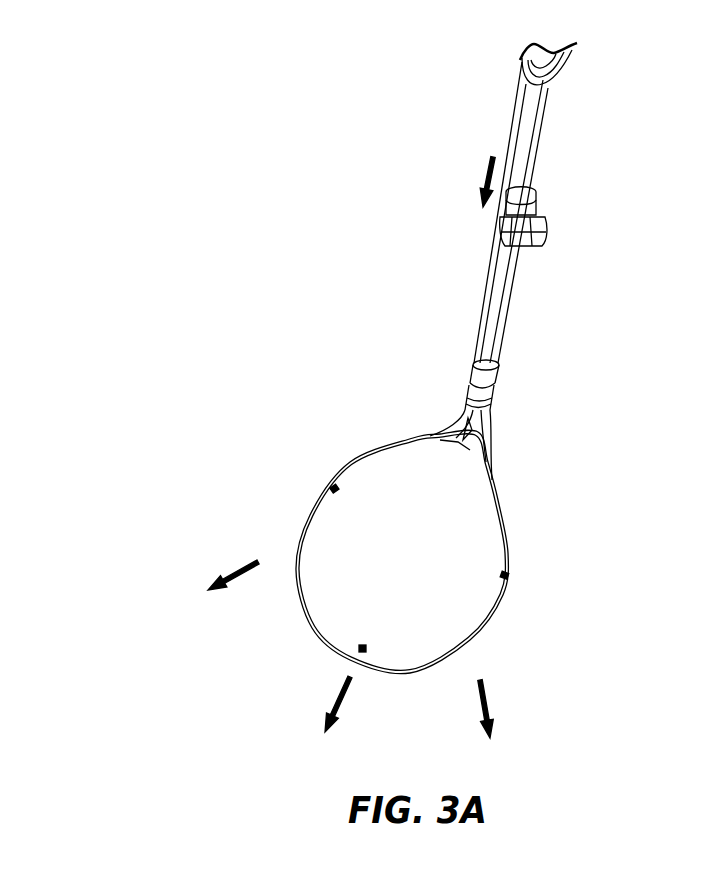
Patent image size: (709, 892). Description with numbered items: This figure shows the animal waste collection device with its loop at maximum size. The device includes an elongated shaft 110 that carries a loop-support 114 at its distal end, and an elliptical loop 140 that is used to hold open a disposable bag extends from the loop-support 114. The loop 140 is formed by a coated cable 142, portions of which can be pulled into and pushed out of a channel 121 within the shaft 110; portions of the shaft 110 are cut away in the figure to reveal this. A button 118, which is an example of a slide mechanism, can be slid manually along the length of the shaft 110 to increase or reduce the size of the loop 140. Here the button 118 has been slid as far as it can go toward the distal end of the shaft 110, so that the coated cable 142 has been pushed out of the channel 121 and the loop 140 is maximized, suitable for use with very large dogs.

The elongated shaft 110 is at (402, 390).
The loop-support 114 is at (510, 445).
The button 118 is at (571, 210).
The channel 121 is at (551, 226).
The loop 140 is at (336, 539).
The coated cable 142 is at (402, 507).